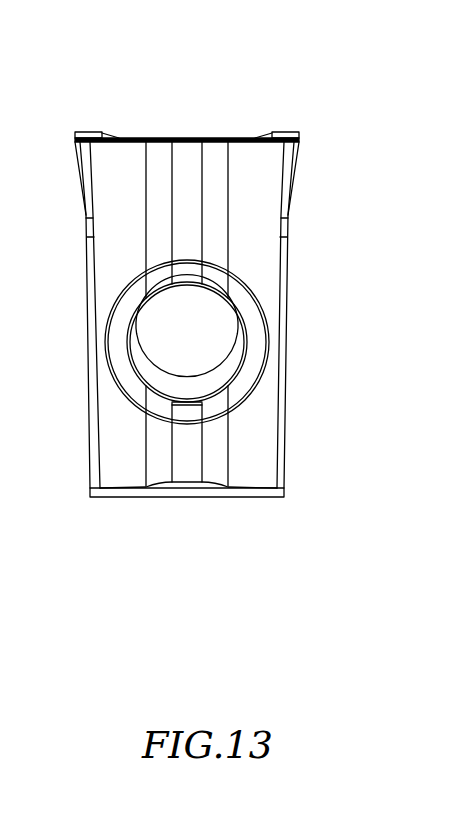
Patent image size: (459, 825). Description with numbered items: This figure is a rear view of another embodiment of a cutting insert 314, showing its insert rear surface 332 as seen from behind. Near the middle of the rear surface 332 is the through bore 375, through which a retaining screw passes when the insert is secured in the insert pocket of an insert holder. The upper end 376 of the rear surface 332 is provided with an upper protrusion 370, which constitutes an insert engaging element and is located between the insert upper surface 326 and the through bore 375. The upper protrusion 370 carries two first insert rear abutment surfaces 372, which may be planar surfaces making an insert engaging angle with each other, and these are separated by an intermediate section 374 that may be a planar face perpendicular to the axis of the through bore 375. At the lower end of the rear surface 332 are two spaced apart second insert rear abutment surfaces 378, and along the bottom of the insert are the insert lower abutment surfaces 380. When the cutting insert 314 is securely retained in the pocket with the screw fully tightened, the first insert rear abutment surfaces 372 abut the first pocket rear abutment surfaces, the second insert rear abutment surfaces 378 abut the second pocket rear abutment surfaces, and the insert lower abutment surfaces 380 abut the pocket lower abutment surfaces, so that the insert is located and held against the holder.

The insert upper surface 326 is at (211, 315).
The cutting insert 314 is at (211, 343).
The upper end of the rear surface 376 is at (278, 160).
The upper protrusion 370 is at (222, 275).
The first insert rear abutment surfaces 372 is at (163, 138).
The intermediate section 374 is at (192, 192).
The through bore 375 is at (213, 332).
The insert rear surface 332 is at (260, 411).
The second insert rear abutment surfaces 378 is at (112, 470).
The insert lower abutment surfaces 380 is at (97, 496).